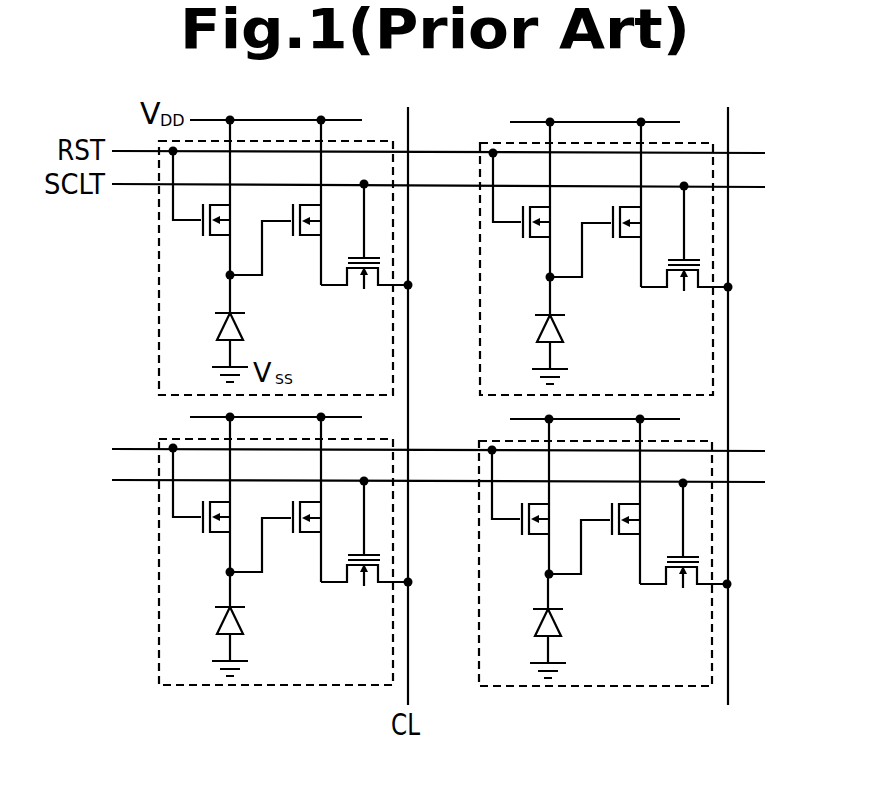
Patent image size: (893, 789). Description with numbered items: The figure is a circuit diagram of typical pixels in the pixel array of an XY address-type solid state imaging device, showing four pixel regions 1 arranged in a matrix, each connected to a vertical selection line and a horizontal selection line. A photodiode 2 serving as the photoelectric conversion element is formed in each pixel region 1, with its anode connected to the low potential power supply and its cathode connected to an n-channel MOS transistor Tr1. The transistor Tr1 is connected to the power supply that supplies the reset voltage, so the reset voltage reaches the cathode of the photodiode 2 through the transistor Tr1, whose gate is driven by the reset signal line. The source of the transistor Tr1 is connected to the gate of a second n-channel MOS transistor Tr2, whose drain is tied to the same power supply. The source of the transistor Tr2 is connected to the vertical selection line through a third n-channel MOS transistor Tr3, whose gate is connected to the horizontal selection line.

The pixel region 1 is at (157, 322).
The photodiode 2 is at (247, 327).
The n-channel MOS transistor Tr1 is at (217, 237).
The n-channel MOS transistor Tr2 is at (313, 240).
The n-channel MOS transistor Tr3 is at (362, 288).